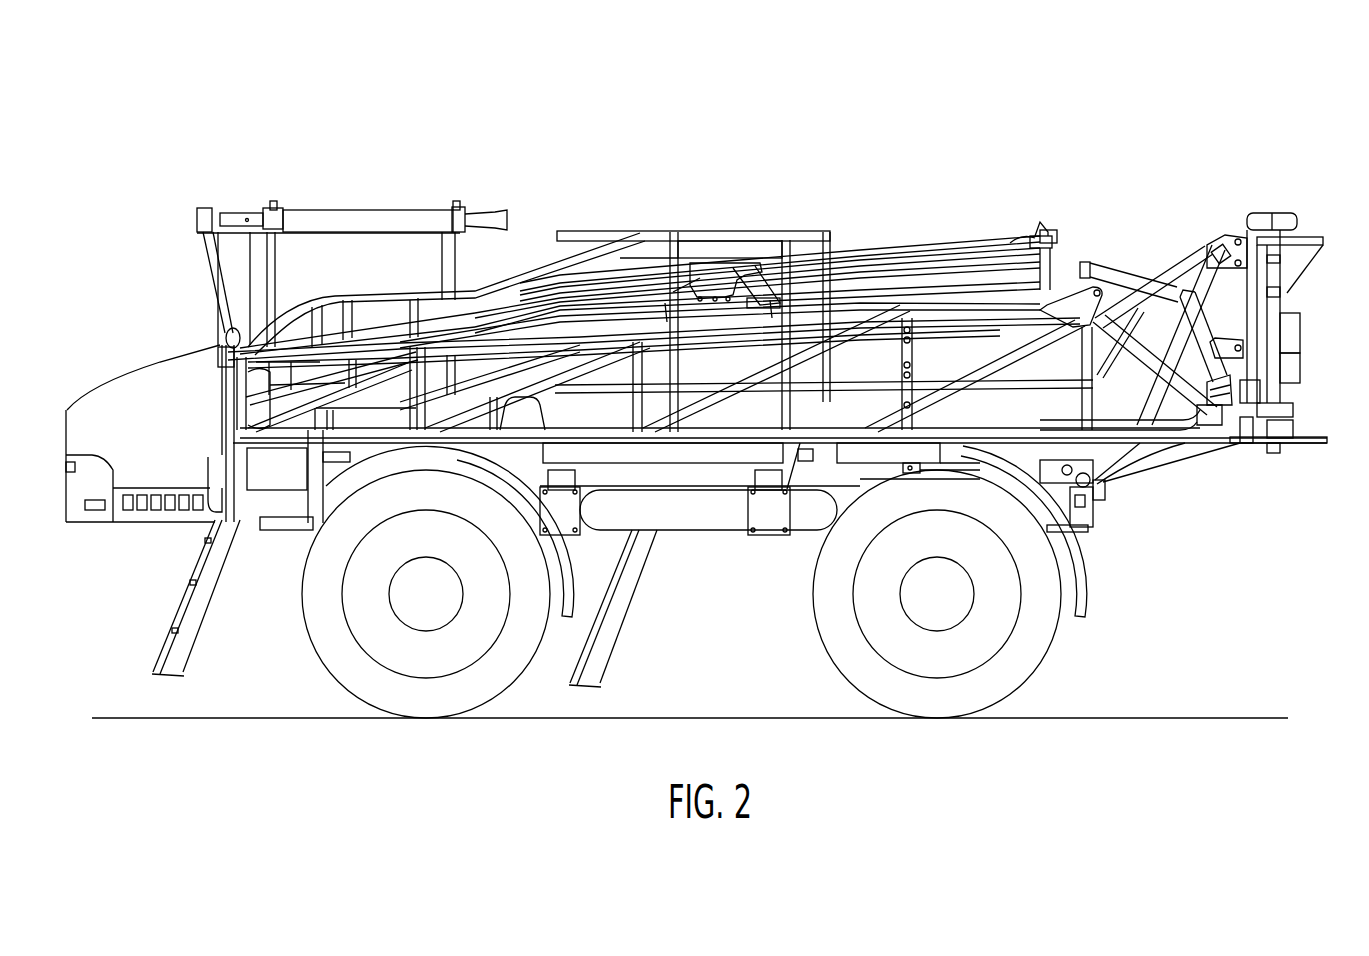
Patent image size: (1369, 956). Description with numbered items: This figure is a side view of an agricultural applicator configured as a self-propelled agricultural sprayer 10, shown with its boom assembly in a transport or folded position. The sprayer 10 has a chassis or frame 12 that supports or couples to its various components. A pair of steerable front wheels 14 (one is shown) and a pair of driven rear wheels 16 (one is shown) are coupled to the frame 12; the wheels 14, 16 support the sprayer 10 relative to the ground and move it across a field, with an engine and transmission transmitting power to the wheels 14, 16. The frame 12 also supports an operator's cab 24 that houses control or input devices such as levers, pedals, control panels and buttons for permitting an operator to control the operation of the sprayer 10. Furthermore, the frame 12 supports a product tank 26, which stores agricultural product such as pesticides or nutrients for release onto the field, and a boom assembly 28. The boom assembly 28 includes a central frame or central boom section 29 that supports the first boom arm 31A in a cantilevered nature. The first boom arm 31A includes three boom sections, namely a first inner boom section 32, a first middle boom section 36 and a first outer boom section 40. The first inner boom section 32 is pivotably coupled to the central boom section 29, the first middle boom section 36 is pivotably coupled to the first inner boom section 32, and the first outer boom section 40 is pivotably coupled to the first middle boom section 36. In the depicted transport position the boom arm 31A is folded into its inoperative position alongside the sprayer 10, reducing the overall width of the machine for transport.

The agricultural sprayer 10 is at (1092, 160).
The frame 12 is at (695, 515).
The front wheels 14 is at (507, 660).
The rear wheels 16 is at (1015, 668).
The operator's cab 24 is at (348, 210).
The product tank 26 is at (577, 267).
The boom assembly 28 is at (654, 264).
The central boom section 29 is at (1293, 214).
The first boom arm 31A is at (1053, 218).
The first inner boom section 32 is at (654, 282).
The first middle boom section 36 is at (654, 282).
The first outer boom section 40 is at (880, 243).